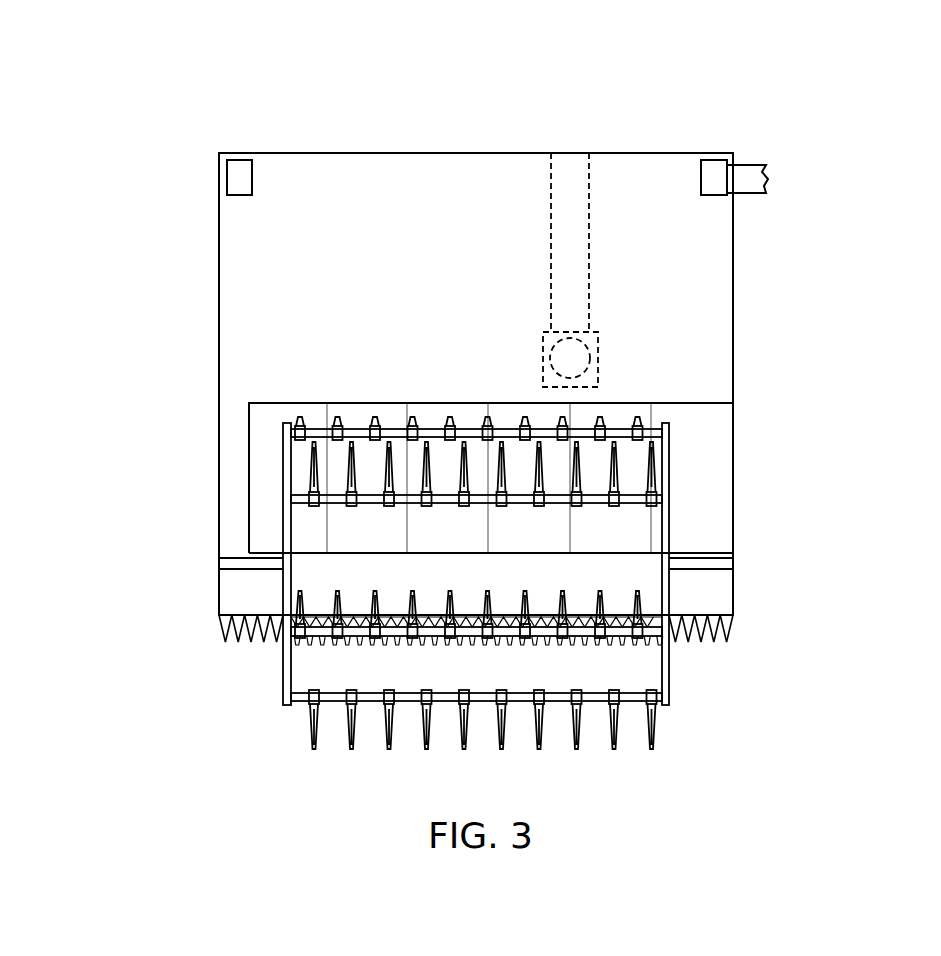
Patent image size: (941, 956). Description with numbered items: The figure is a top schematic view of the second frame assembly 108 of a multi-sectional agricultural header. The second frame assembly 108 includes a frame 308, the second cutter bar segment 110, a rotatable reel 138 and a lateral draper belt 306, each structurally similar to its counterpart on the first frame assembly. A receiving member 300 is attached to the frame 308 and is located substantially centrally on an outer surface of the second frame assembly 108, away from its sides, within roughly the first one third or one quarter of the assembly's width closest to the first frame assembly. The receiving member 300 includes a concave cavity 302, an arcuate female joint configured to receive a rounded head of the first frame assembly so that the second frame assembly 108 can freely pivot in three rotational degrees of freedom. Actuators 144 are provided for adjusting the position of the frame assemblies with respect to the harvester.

The second frame assembly 108 is at (822, 250).
The actuators 144 is at (241, 172).
The receiving member 300 is at (571, 234).
The frame 308 is at (551, 181).
The concave cavity 302 is at (595, 342).
The lateral draper belt 306 is at (700, 418).
The second cutter bar segment 110 is at (225, 642).
The rotatable reel 138 is at (283, 705).